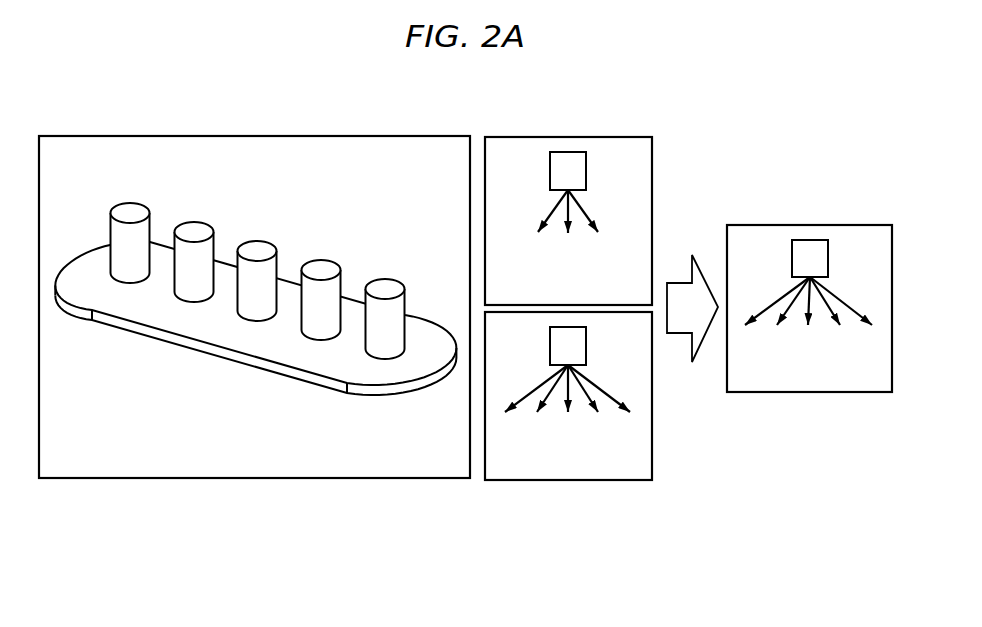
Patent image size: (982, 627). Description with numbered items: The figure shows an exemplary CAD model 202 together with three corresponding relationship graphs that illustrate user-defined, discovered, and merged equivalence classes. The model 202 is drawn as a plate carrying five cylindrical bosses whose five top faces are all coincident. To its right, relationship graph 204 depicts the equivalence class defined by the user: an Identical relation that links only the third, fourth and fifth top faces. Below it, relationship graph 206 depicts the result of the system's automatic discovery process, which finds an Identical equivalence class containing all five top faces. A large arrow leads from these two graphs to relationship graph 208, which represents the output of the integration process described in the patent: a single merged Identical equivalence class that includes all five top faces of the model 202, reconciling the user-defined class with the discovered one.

The CAD model 202 is at (266, 188).
The relationship graph 204 is at (614, 137).
The relationship graph 206 is at (582, 480).
The relationship graph 208 is at (862, 224).